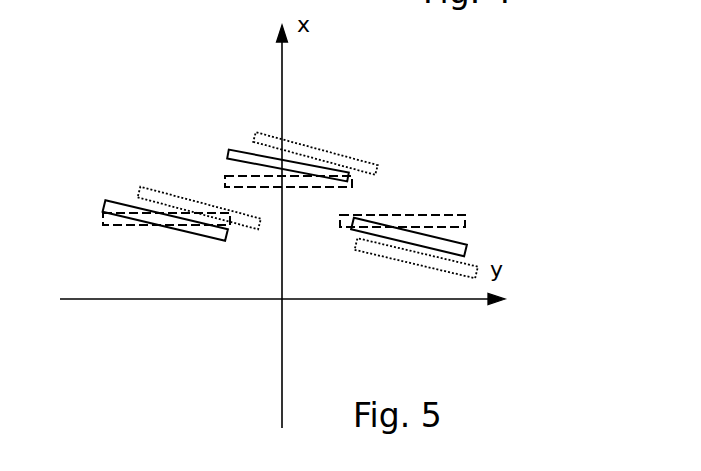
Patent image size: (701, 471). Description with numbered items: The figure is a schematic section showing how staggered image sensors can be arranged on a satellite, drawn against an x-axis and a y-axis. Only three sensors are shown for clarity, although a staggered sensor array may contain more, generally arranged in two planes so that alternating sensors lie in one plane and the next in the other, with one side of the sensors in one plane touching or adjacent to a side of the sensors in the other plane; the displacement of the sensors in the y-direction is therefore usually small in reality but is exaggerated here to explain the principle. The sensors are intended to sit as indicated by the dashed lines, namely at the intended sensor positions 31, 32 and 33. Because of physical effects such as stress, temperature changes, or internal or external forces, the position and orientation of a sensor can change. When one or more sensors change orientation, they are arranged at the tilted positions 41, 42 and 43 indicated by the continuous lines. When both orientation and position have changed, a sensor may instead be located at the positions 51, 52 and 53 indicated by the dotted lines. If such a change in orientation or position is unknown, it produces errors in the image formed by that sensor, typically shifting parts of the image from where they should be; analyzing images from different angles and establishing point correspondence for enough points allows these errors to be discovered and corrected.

The intended sensor position 31 is at (138, 225).
The intended sensor position 32 is at (223, 180).
The intended sensor position 33 is at (437, 215).
The sensor position with changed orientation 41 is at (112, 200).
The sensor position with changed orientation 42 is at (235, 143).
The sensor position with changed orientation 43 is at (468, 248).
The sensor position with changed orientation and position 51 is at (190, 197).
The sensor position with changed orientation and position 52 is at (267, 133).
The sensor position with changed orientation and position 53 is at (473, 263).